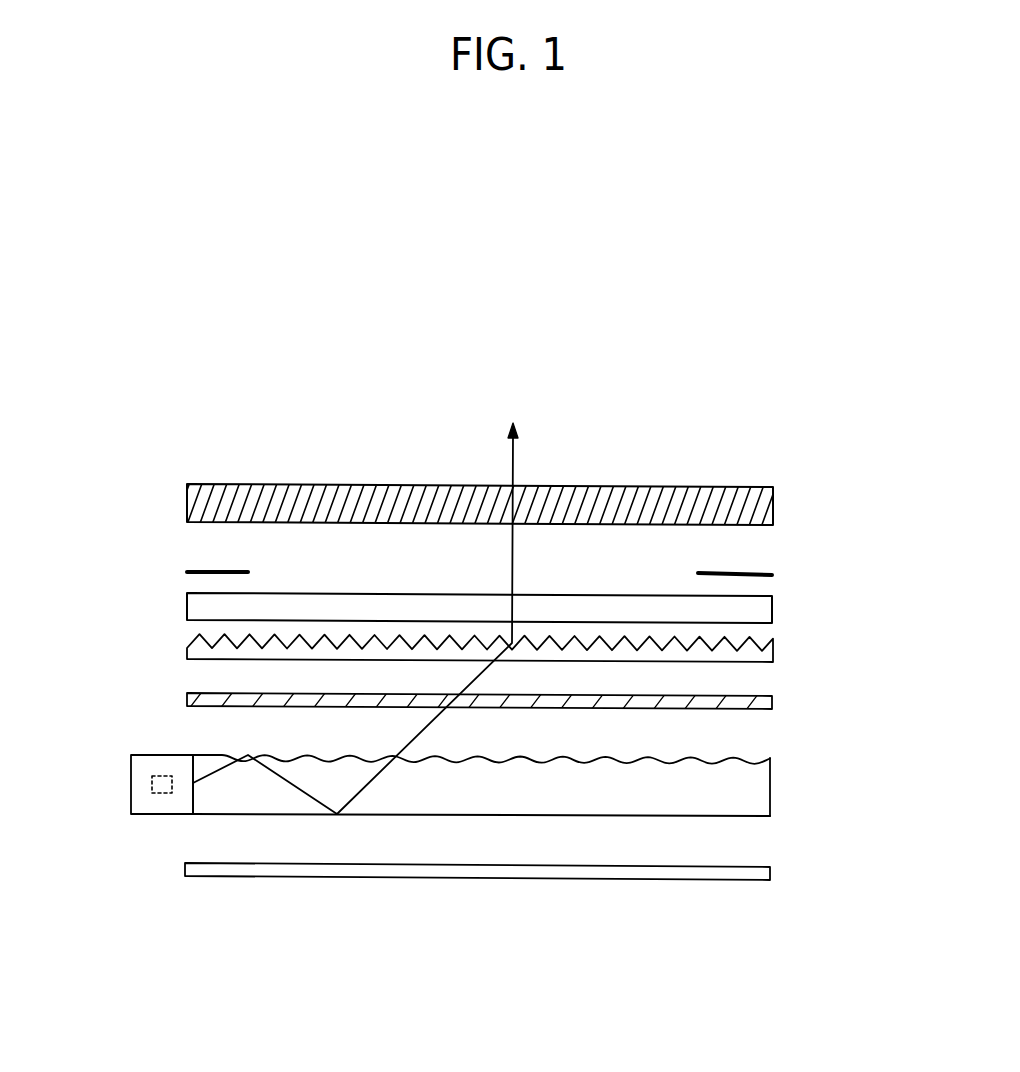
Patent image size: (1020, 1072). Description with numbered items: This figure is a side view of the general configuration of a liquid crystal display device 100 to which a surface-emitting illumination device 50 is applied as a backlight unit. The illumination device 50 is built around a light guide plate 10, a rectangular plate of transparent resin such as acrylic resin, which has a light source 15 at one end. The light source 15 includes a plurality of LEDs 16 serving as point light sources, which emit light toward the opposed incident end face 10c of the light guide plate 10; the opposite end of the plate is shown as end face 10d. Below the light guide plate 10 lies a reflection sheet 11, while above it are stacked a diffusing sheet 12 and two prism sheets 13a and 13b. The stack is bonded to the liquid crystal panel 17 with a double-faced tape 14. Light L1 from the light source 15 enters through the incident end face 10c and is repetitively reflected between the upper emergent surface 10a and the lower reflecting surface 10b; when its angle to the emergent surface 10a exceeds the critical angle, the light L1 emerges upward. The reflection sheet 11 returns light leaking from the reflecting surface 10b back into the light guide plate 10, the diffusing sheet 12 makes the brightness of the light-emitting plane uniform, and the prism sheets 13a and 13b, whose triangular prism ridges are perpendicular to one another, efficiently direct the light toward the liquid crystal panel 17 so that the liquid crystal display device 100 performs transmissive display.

The liquid crystal display device 100 is at (548, 211).
The light guide plate 10 is at (457, 776).
The emergent surface 10a is at (277, 755).
The reflecting surface 10b is at (698, 818).
The incident end face 10c is at (192, 790).
The opposite end surface of light guide plate 10d is at (770, 787).
The reflection sheet 11 is at (772, 874).
The diffusing sheet 12 is at (772, 703).
The prism sheet 13a is at (757, 603).
The prism sheet 13b is at (757, 648).
The double-faced tape 14 is at (185, 573).
The light source 15 is at (120, 776).
The LEDs 16 is at (152, 793).
The liquid crystal panel 17 is at (773, 497).
The illumination device 50 is at (878, 908).
The light L1 is at (513, 453).